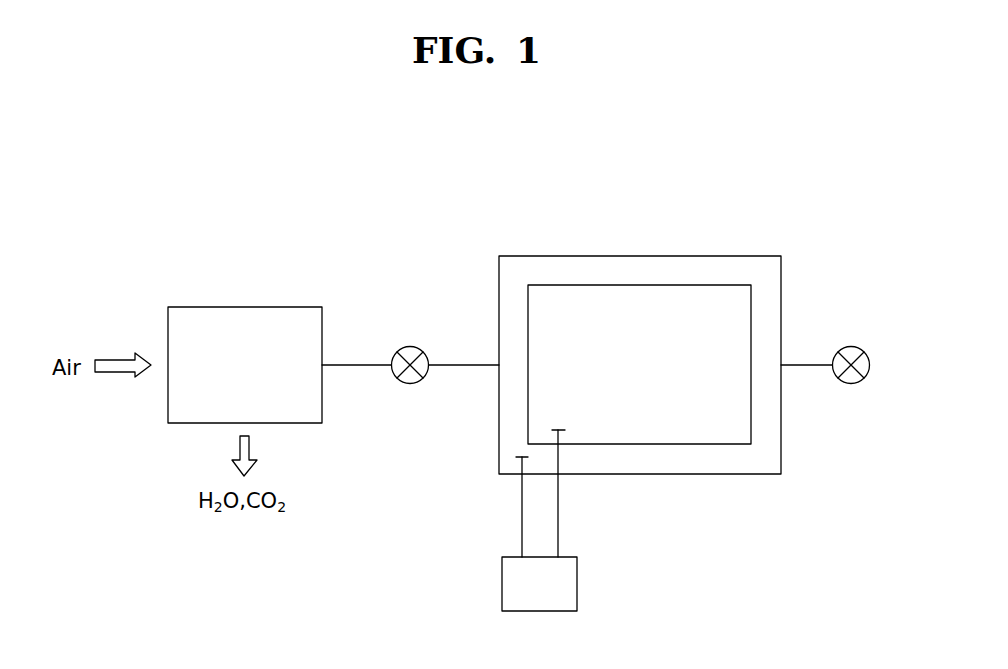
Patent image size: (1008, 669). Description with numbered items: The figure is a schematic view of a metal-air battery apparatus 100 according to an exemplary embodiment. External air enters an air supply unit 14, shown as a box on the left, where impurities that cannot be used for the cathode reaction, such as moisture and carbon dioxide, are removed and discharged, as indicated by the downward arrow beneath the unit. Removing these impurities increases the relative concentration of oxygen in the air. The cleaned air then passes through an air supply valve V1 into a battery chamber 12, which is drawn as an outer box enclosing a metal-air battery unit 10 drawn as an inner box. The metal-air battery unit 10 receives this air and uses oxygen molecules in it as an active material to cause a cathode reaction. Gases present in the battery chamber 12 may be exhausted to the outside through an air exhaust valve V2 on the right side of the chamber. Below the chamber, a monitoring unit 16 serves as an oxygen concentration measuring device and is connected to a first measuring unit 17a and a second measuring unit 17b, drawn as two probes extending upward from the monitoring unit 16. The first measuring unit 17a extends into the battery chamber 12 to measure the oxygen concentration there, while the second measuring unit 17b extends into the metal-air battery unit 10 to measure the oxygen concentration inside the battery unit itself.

The metal-air battery apparatus 100 is at (775, 191).
The metal-air battery unit 10 is at (669, 307).
The battery chamber 12 is at (599, 270).
The air supply unit 14 is at (242, 312).
The monitoring unit 16 is at (577, 583).
The first measuring unit 17a is at (522, 510).
The second measuring unit 17b is at (558, 513).
The air supply valve V1 is at (410, 346).
The air exhaust valve V2 is at (851, 346).